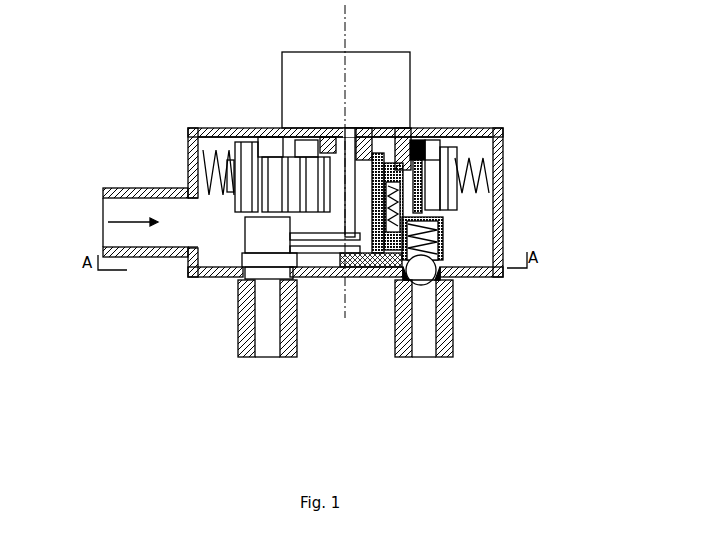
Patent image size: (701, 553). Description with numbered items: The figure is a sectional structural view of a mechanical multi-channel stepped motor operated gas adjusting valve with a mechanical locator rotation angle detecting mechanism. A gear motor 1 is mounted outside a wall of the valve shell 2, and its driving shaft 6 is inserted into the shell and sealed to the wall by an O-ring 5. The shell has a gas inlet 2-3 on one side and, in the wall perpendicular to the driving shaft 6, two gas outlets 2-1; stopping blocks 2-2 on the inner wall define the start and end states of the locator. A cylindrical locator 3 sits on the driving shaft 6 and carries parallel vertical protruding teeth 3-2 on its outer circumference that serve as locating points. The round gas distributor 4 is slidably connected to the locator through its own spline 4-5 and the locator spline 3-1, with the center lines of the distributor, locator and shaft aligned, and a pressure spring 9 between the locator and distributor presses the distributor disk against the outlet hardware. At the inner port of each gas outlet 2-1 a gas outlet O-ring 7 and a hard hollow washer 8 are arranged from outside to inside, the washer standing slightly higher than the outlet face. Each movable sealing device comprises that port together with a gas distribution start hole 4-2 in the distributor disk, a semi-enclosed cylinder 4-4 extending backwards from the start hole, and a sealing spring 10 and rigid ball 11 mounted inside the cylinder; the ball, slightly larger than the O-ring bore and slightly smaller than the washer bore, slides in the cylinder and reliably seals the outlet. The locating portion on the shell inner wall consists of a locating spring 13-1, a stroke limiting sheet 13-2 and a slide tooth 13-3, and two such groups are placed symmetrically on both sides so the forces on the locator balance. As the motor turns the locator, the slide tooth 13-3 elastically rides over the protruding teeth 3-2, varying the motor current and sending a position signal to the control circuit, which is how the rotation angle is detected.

The gear motor 1 is at (346, 68).
The valve shell 2 is at (389, 173).
The gas outlet 2-1 is at (340, 344).
The stopping block 2-2 is at (355, 72).
The gas inlet 2-3 is at (118, 222).
The locator 3 is at (206, 212).
The spline of the locator 3-1 is at (500, 95).
The protruding teeth 3-2 is at (268, 110).
The gas distributor 4 is at (496, 299).
The gas distribution start hole 4-2 is at (497, 315).
The semi-enclosed cylinder 4-4 is at (502, 274).
The spline of the gas distributor 4-5 is at (490, 195).
The O-ring 5 is at (420, 130).
The driving shaft 6 is at (387, 89).
The gas outlet O-ring 7 is at (228, 318).
The hard hollow washer 8 is at (221, 314).
The pressure spring 9 is at (208, 270).
The sealing spring 10 is at (499, 238).
The rigid ball 11 is at (390, 321).
The locating spring 13-1 is at (316, 140).
The stroke limiting sheet 13-2 is at (188, 102).
The slide tooth 13-3 is at (325, 103).